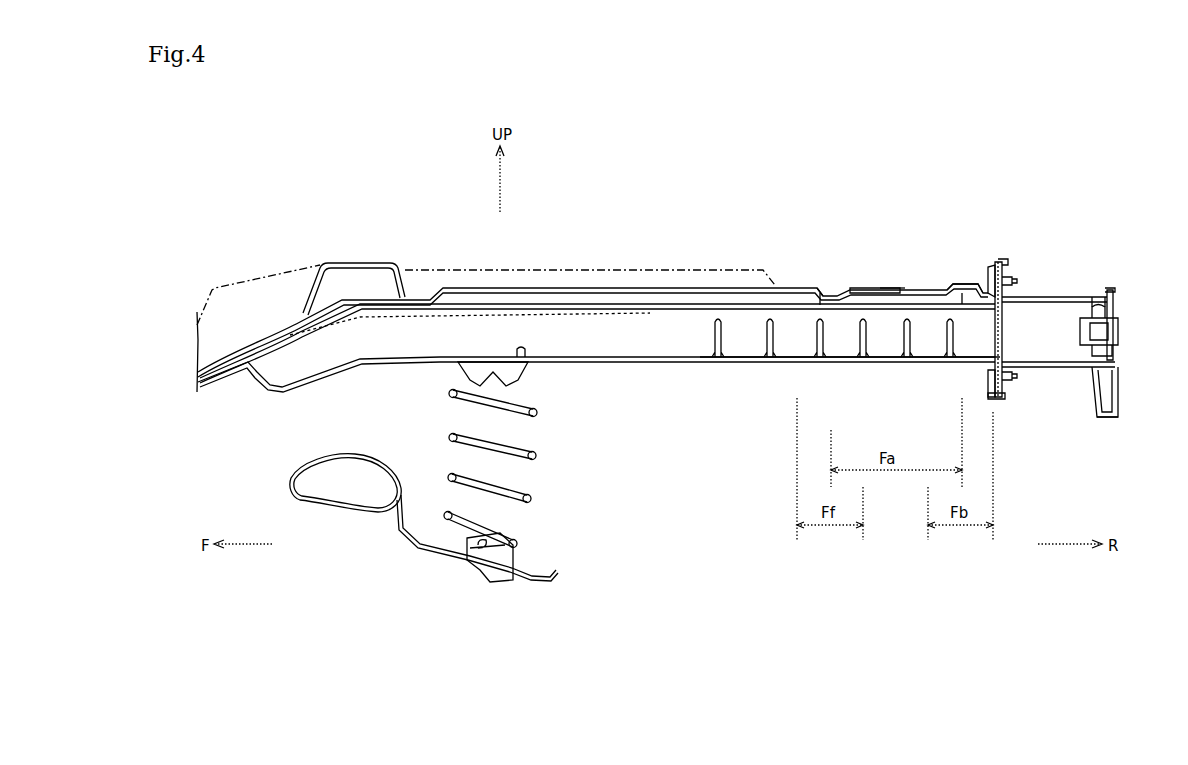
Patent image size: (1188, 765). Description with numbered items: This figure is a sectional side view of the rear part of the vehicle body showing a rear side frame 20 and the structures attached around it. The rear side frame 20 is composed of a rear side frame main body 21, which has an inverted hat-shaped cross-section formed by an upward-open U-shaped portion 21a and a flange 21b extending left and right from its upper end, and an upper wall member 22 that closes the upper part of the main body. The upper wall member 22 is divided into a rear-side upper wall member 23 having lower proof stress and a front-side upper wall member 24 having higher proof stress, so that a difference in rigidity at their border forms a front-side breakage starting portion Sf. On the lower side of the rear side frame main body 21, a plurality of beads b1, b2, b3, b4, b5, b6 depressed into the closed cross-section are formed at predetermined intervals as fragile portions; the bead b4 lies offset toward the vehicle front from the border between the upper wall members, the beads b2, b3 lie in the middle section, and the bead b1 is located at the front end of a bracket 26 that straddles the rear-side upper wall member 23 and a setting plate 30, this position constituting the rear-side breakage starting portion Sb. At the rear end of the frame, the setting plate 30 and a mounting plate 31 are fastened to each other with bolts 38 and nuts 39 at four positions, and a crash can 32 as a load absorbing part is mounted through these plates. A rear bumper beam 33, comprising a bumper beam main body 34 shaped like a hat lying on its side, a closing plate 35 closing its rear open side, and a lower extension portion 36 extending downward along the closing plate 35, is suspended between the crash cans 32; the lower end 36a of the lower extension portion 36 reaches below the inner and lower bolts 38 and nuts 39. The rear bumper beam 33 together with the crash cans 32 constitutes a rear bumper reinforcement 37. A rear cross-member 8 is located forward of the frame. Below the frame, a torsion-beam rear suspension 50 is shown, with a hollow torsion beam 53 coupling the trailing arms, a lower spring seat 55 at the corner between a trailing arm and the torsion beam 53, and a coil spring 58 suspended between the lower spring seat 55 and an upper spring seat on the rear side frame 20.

The rear cross-member 8 is at (357, 260).
The rear side frame 20 is at (598, 304).
The rear side frame main body 21 is at (758, 362).
The U-shaped portion 21a is at (608, 360).
The flange 21b is at (596, 302).
The upper wall member 22 is at (548, 254).
The rear-side upper wall member 23 is at (878, 286).
The front-side upper wall member 24 is at (666, 288).
The bracket 26 is at (955, 286).
The setting plate 30 is at (997, 324).
The mounting plate 31 is at (1004, 320).
The crash can 32 is at (1046, 298).
The rear bumper beam 33 is at (1116, 294).
The bumper beam main body 34 is at (1094, 294).
The closing plate 35 is at (1120, 312).
The lower extension portion 36 is at (1120, 400).
The lower end 36a is at (1116, 416).
The rear bumper reinforcement 37 is at (1070, 386).
The bolts 38 is at (989, 268).
The nuts 39 is at (1011, 275).
The bead b1 is at (948, 358).
The bead b2 is at (905, 358).
The bead b3 is at (861, 356).
The bead b4 is at (818, 356).
The bead b5 is at (772, 360).
The bead b6 is at (722, 360).
The front-side breakage starting portion Sf is at (834, 284).
The rear-side breakage starting portion Sb is at (898, 286).
The torsion-beam rear suspension 50 is at (424, 506).
The torsion beam 53 is at (344, 451).
The lower spring seat 55 is at (393, 541).
The coil spring 58 is at (530, 494).